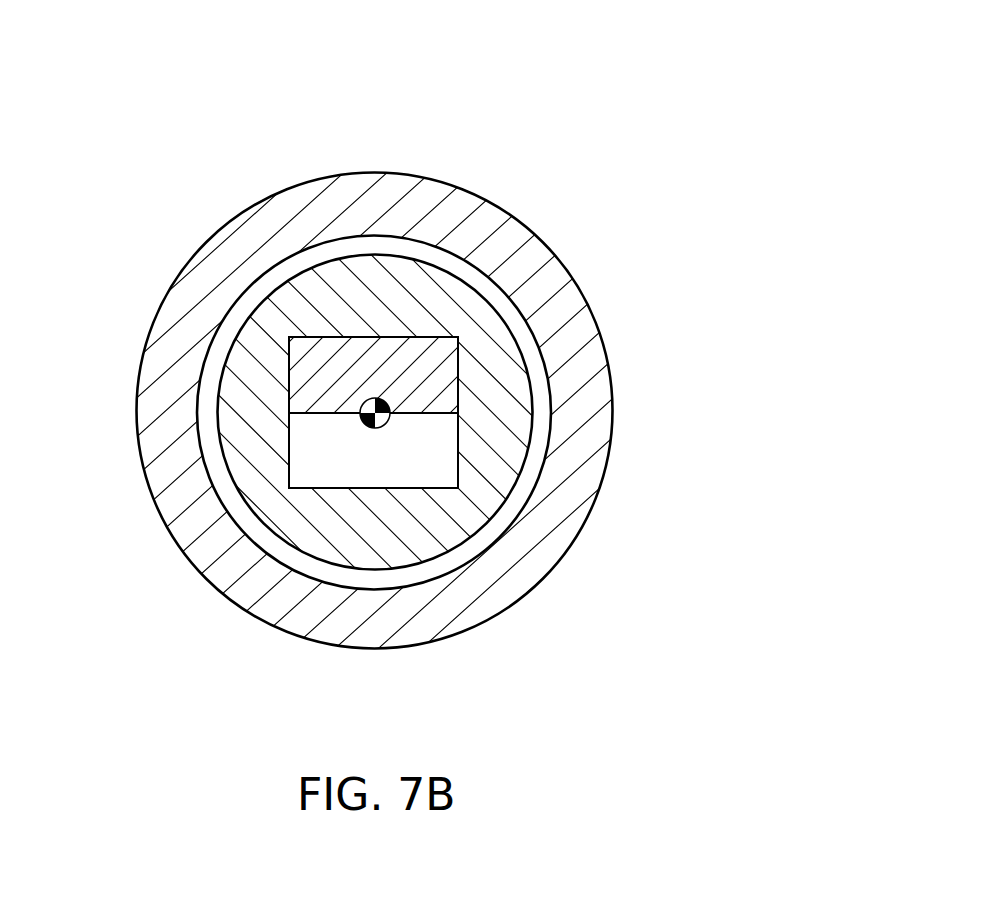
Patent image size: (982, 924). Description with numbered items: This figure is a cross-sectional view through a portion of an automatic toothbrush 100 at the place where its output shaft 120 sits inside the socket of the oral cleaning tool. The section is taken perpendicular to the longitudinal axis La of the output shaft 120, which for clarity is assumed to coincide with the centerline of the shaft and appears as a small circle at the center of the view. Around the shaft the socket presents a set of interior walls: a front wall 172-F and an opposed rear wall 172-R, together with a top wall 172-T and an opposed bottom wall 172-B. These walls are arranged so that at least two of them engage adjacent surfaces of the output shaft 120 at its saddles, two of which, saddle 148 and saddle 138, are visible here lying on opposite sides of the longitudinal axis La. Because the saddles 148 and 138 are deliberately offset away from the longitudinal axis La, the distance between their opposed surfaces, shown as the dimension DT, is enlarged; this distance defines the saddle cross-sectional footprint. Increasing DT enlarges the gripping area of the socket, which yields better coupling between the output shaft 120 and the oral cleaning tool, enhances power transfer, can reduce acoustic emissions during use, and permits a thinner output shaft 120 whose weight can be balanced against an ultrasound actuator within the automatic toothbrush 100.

The automatic toothbrush 100 is at (610, 93).
The saddle 148 is at (312, 335).
The output shaft 120 is at (425, 353).
The saddle 138 is at (318, 490).
The front wall 172-F is at (356, 341).
The top wall 172-T is at (454, 435).
The rear wall 172-R is at (432, 486).
The bottom wall 172-B is at (293, 457).
The longitudinal axis La is at (375, 428).
The saddle cross-sectional footprint distance DT is at (470, 337).